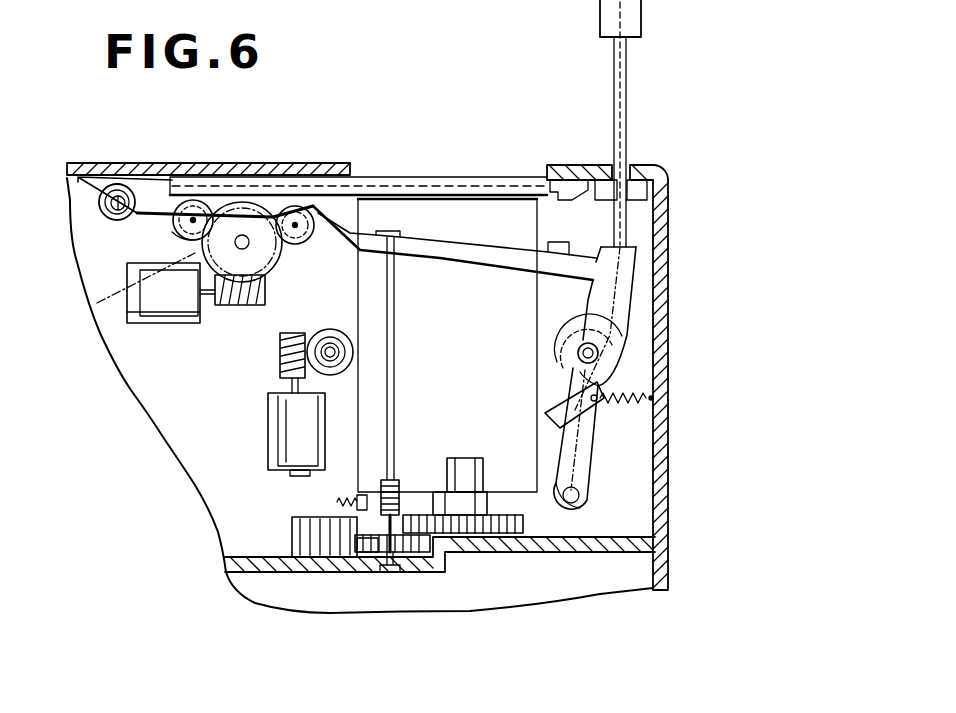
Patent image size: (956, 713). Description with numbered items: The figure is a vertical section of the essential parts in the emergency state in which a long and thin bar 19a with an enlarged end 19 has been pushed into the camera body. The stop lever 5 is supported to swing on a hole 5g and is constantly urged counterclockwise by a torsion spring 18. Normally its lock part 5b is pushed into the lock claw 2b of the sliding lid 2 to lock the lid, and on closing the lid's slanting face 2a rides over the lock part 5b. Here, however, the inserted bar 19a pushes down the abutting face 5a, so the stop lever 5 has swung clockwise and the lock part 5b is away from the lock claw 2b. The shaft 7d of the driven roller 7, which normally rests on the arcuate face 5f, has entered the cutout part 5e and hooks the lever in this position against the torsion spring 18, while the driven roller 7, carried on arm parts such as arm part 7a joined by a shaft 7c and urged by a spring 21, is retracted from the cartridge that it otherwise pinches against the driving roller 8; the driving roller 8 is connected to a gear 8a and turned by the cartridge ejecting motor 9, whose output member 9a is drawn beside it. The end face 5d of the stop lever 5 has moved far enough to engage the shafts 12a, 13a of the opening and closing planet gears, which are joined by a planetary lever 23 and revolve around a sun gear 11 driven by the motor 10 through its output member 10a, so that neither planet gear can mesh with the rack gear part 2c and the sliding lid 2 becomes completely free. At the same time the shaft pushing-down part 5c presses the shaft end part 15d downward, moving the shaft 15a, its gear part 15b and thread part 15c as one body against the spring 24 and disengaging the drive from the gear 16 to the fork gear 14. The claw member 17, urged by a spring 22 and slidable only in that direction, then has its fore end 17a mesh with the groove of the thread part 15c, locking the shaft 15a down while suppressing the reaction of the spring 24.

The sliding lid 2 is at (270, 188).
The slanting face 2a is at (577, 183).
The lock claw 2b is at (557, 187).
The rack gear part 2c is at (311, 197).
The stop lever 5 is at (621, 291).
The abutting face 5a is at (627, 248).
The lock part 5b is at (560, 242).
The shaft pushing-down part 5c is at (393, 231).
The end face 5d is at (183, 221).
The cutout part 5e is at (628, 365).
The arcuate face 5f is at (578, 470).
The hole 5g is at (90, 203).
The driven roller 7 is at (587, 333).
The arm part 7a is at (588, 490).
The shaft 7c is at (600, 505).
The shaft 7d is at (603, 351).
The driving roller 8 is at (347, 233).
The gear 8a is at (330, 360).
The cartridge ejecting motor 9 is at (357, 498).
The worm gear 9a is at (325, 382).
The motor 10 is at (173, 300).
The motor worm 10a is at (278, 342).
The sun gear 11 is at (240, 213).
The shaft 12a is at (207, 231).
The shaft 13a is at (268, 395).
The fork gear 14 is at (560, 552).
The shaft 15a is at (503, 540).
The gear part 15b is at (410, 560).
The thread part 15c is at (460, 533).
The shaft end part 15d is at (419, 248).
The gear 16 is at (357, 544).
The claw member 17 is at (340, 556).
The fore end 17a is at (380, 556).
The torsion spring 18 is at (104, 175).
The enlarged end 19 is at (642, 12).
The long and thin bar 19a is at (622, 218).
The spring 21 is at (629, 403).
The spring 22 is at (398, 498).
The planetary lever 23 is at (97, 303).
The spring 24 is at (395, 572).